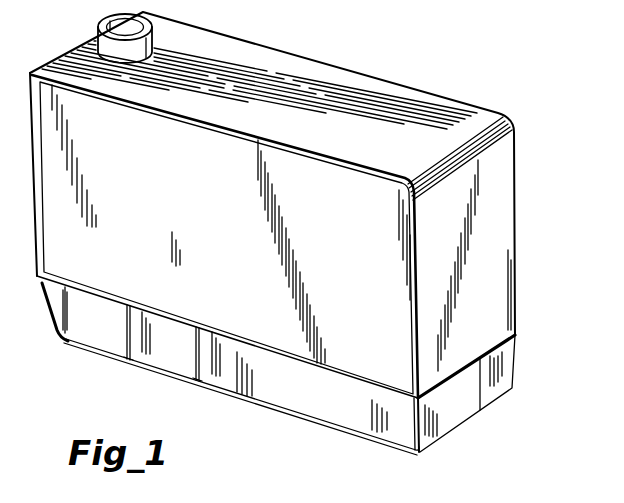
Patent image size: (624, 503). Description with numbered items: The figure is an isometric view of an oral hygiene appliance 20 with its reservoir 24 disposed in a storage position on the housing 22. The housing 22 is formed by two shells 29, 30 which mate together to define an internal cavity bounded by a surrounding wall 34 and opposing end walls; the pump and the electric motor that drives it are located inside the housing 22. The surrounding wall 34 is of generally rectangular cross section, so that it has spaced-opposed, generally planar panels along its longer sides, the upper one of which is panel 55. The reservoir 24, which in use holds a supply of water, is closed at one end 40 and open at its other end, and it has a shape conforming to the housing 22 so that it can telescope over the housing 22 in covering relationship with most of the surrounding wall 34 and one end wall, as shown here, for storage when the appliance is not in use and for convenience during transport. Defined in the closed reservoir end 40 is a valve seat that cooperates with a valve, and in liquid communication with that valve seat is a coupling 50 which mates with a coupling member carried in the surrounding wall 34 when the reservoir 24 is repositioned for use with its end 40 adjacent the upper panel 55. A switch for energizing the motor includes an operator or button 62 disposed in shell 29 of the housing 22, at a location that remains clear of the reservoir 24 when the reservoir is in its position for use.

The oral hygiene appliance 20 is at (542, 171).
The housing 22 is at (479, 411).
The reservoir 24 is at (450, 95).
The shell 29 is at (431, 446).
The shell 30 is at (510, 366).
The surrounding wall 34 is at (452, 413).
The closed end of reservoir 40 is at (343, 86).
The coupling 50 is at (152, 40).
The panel 55 is at (349, 413).
The button 62 is at (160, 358).